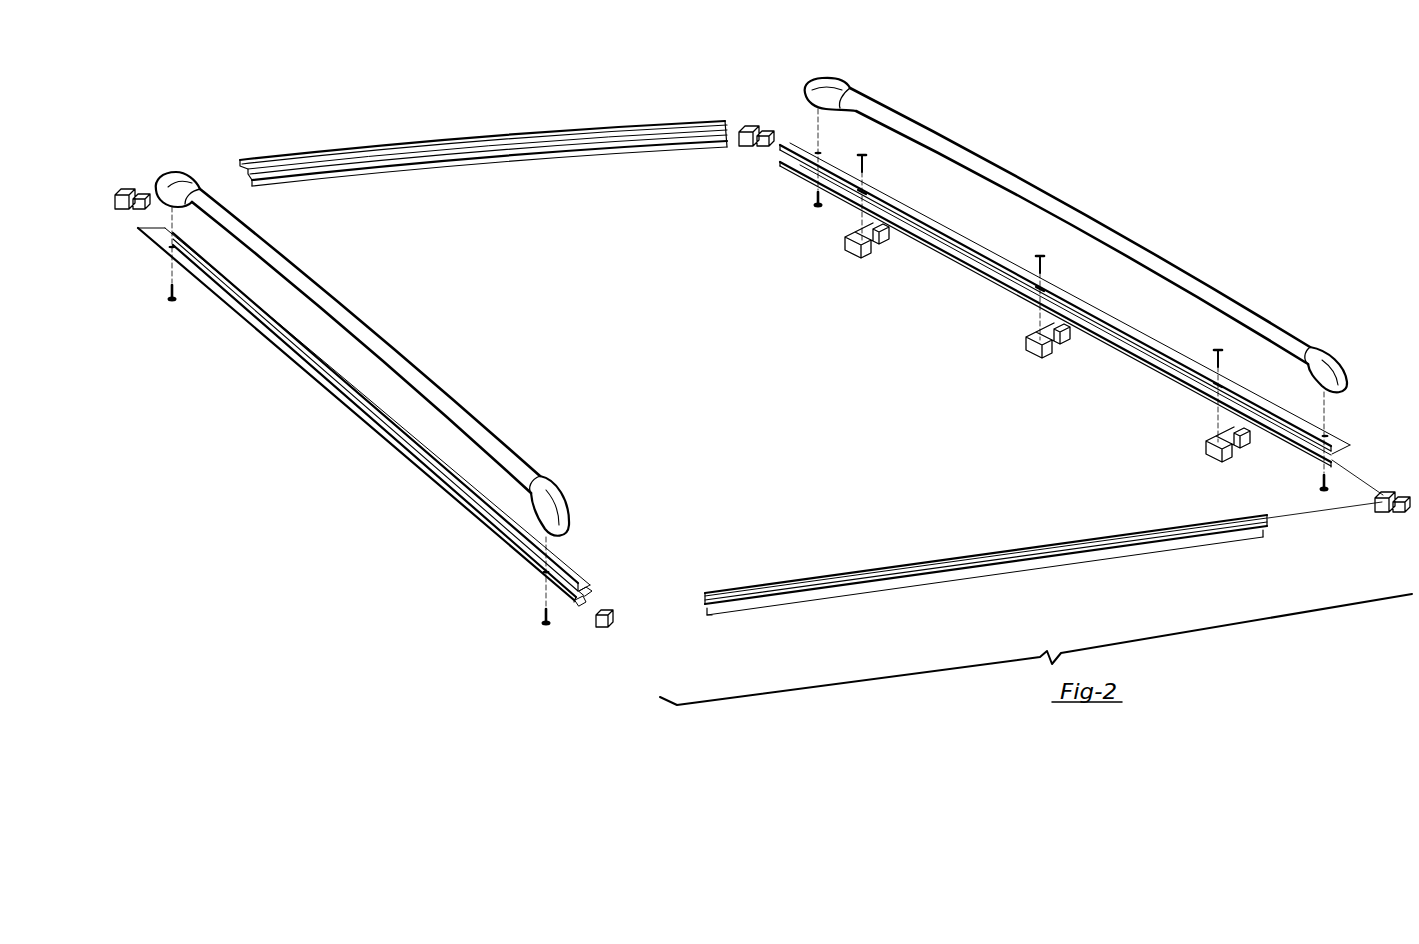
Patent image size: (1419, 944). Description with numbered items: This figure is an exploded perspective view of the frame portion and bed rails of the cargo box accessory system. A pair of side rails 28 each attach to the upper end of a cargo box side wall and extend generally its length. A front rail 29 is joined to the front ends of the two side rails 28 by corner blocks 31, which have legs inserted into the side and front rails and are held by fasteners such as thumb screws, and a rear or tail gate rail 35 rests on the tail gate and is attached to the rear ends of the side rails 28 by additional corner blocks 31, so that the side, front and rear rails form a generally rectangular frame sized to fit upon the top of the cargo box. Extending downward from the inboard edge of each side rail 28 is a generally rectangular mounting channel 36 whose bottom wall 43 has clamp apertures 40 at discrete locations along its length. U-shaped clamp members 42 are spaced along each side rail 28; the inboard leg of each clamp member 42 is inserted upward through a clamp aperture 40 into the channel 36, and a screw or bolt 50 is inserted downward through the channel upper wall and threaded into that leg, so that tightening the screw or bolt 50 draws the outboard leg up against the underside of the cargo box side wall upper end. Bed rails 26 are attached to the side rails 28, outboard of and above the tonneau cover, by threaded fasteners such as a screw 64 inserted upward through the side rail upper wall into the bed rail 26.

The bed rail 26 is at (440, 388).
The side rail 28 is at (392, 455).
The front rail 29 is at (468, 140).
The corner block 31 is at (133, 186).
The rear rail 35 is at (872, 594).
The mounting channel 36 is at (594, 584).
The clamp aperture 40 is at (862, 212).
The clamp member 42 is at (872, 253).
The bottom wall 43 is at (582, 604).
The screw or bolt 50 is at (868, 159).
The screw 64 is at (815, 203).